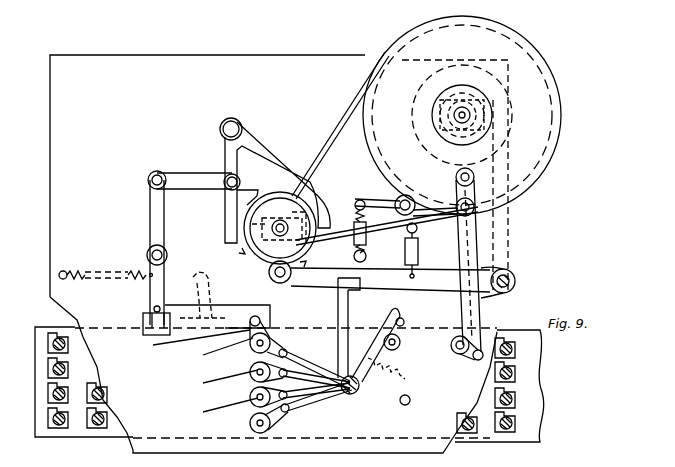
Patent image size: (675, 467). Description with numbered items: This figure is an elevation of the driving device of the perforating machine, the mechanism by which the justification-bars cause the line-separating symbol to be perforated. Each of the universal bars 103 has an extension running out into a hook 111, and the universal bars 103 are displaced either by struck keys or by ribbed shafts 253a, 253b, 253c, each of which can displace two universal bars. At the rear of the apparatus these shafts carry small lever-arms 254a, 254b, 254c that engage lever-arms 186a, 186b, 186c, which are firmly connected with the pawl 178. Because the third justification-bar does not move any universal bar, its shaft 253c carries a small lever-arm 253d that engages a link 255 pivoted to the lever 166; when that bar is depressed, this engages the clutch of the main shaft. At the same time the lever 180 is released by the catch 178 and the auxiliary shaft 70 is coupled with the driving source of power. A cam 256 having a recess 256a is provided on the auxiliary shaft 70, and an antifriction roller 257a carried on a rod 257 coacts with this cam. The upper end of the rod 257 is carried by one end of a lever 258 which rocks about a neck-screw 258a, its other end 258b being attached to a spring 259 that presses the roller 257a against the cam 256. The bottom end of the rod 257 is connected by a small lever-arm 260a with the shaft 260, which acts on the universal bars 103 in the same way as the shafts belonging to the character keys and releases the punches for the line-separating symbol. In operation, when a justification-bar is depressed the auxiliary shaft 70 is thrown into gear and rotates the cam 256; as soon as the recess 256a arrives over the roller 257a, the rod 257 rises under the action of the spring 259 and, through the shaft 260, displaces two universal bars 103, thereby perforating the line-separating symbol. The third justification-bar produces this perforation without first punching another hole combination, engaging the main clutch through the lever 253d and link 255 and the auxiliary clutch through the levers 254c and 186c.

The auxiliary shaft 70 is at (470, 112).
The universal bars 103 is at (38, 388).
The hook 111 is at (199, 275).
The lever 166 is at (150, 292).
The pawl 178 is at (344, 308).
The lever 180 is at (424, 288).
The lever-arm 186a is at (308, 395).
The lever-arm 186b is at (303, 382).
The lever-arm 186c is at (297, 363).
The shaft 253a is at (211, 411).
The shaft 253b is at (214, 382).
The shaft 253c is at (212, 353).
The small lever-arm 253d is at (186, 346).
The small lever-arm 254a is at (251, 420).
The small lever-arm 254b is at (250, 397).
The small lever-arm 254c is at (250, 371).
The link 255 is at (258, 316).
The cam 256 is at (417, 98).
The recess 256a is at (463, 82).
The rod 257 is at (475, 247).
The antifriction roller 257a is at (457, 176).
The lever 258 is at (427, 215).
The neck-screw 258a is at (397, 202).
The end of lever 258b is at (358, 202).
The spring 259 is at (364, 235).
The shaft 260 is at (451, 347).
The small lever-arm 260a is at (463, 358).